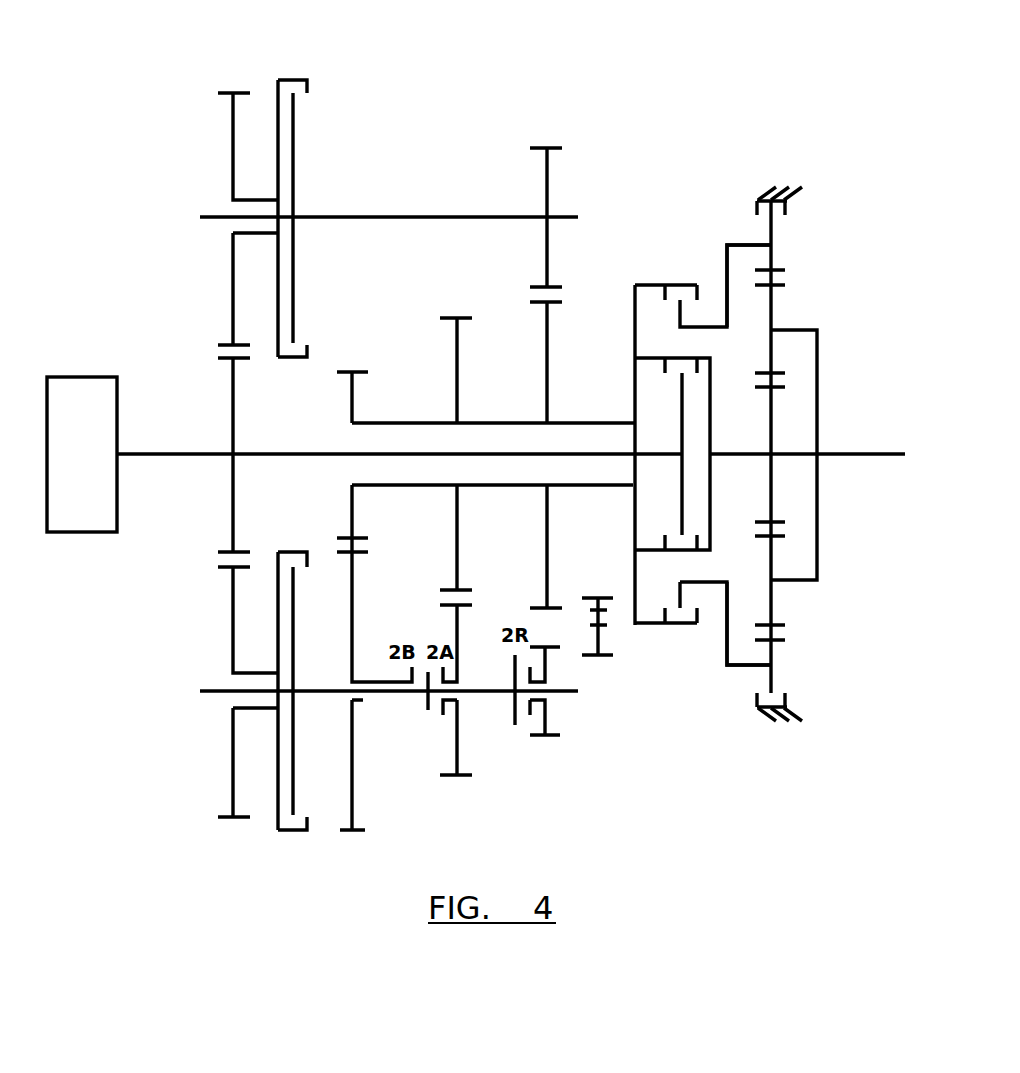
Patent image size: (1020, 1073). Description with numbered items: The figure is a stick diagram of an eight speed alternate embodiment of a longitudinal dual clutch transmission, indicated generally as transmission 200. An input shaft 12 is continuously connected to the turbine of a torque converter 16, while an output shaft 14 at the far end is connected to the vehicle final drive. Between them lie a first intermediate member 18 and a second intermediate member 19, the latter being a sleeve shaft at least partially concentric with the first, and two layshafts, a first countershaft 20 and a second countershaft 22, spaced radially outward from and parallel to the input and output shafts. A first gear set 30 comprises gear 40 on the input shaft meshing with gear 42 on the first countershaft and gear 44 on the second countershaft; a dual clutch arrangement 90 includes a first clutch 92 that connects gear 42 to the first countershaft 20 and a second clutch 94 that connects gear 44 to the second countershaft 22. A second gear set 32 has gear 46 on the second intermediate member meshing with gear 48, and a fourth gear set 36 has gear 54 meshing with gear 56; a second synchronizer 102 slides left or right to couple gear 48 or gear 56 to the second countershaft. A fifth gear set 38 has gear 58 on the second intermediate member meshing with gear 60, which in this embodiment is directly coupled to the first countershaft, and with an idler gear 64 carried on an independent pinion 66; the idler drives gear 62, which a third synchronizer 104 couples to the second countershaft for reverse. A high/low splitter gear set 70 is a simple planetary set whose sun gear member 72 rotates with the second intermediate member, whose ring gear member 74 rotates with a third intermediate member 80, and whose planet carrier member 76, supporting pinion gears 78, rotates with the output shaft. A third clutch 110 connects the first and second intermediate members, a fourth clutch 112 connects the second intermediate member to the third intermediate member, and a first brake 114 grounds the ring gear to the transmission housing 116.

The input shaft 12 is at (172, 452).
The output shaft 14 is at (858, 457).
The torque converter 16 is at (95, 470).
The first intermediate member 18 is at (252, 452).
The second intermediate member 19 is at (500, 421).
The first countershaft 20 is at (210, 212).
The second countershaft 22 is at (213, 692).
The first gear set 30 is at (339, 721).
The second gear set 32 is at (349, 601).
The fourth gear set 36 is at (483, 546).
The fifth gear set 38 is at (548, 378).
The gear 40 is at (232, 380).
The gear 42 is at (232, 268).
The gear 44 is at (232, 620).
The gear 46 is at (348, 407).
The gear 48 is at (355, 612).
The gear 54 is at (457, 522).
The gear 56 is at (457, 637).
The gear 58 is at (547, 336).
The gear 60 is at (547, 260).
The gear 62 is at (547, 662).
The idler gear 64 is at (597, 598).
The pinion 66 is at (600, 627).
The high/low splitter gear set 70 is at (794, 442).
The sun gear member 72 is at (772, 417).
The ring gear member 74 is at (772, 253).
The planet carrier member 76 is at (817, 360).
The pinion gears 78 is at (772, 308).
The third intermediate member 80 is at (727, 257).
The dual clutch arrangement 90 is at (349, 190).
The first clutch 92 is at (290, 80).
The second clutch 94 is at (292, 832).
The second synchronizer 102 is at (425, 700).
The third synchronizer 104 is at (513, 718).
The third clutch 110 is at (698, 365).
The fourth clutch 112 is at (660, 290).
The first brake 114 is at (757, 205).
The transmission housing 116 is at (768, 196).
The transmission 200 is at (742, 403).